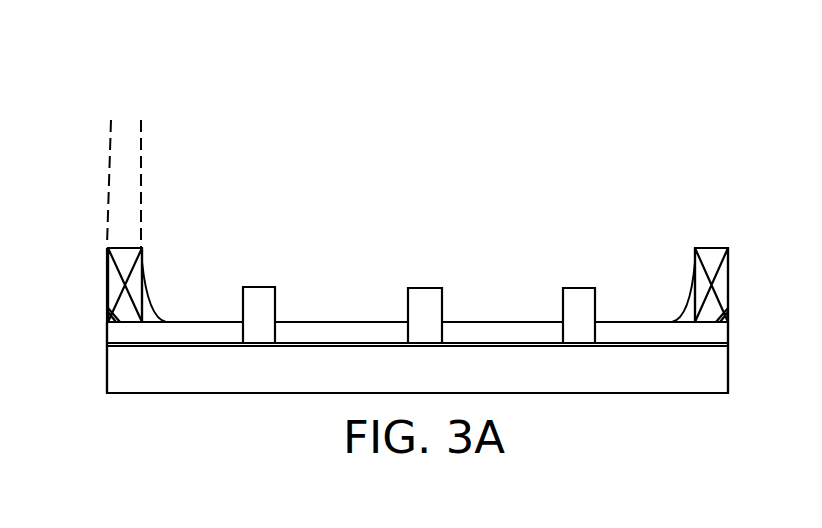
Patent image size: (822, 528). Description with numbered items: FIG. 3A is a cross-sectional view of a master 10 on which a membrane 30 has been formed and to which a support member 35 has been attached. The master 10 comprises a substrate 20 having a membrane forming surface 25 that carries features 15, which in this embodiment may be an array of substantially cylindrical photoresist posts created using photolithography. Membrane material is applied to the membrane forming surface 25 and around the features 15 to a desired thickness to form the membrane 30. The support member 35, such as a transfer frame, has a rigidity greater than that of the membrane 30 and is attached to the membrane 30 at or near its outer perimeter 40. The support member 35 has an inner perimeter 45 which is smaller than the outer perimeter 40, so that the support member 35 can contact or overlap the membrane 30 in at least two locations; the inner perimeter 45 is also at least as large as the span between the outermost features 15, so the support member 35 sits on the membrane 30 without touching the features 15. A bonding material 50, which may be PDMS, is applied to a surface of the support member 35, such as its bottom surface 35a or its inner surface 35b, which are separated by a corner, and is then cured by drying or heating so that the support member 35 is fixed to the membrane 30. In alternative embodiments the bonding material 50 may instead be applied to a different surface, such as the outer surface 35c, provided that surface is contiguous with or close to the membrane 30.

The master 10 is at (718, 415).
The features 15 is at (573, 288).
The substrate 20 is at (712, 385).
The membrane forming surface 25 is at (715, 342).
The membrane 30 is at (697, 337).
The support member 35 is at (105, 249).
The bottom surface 35a is at (107, 309).
The inner surface 35b is at (143, 256).
The outer surface 35c is at (107, 283).
The outer perimeter 40 is at (98, 150).
The inner perimeter 45 is at (145, 147).
The bonding material 50 is at (158, 314).